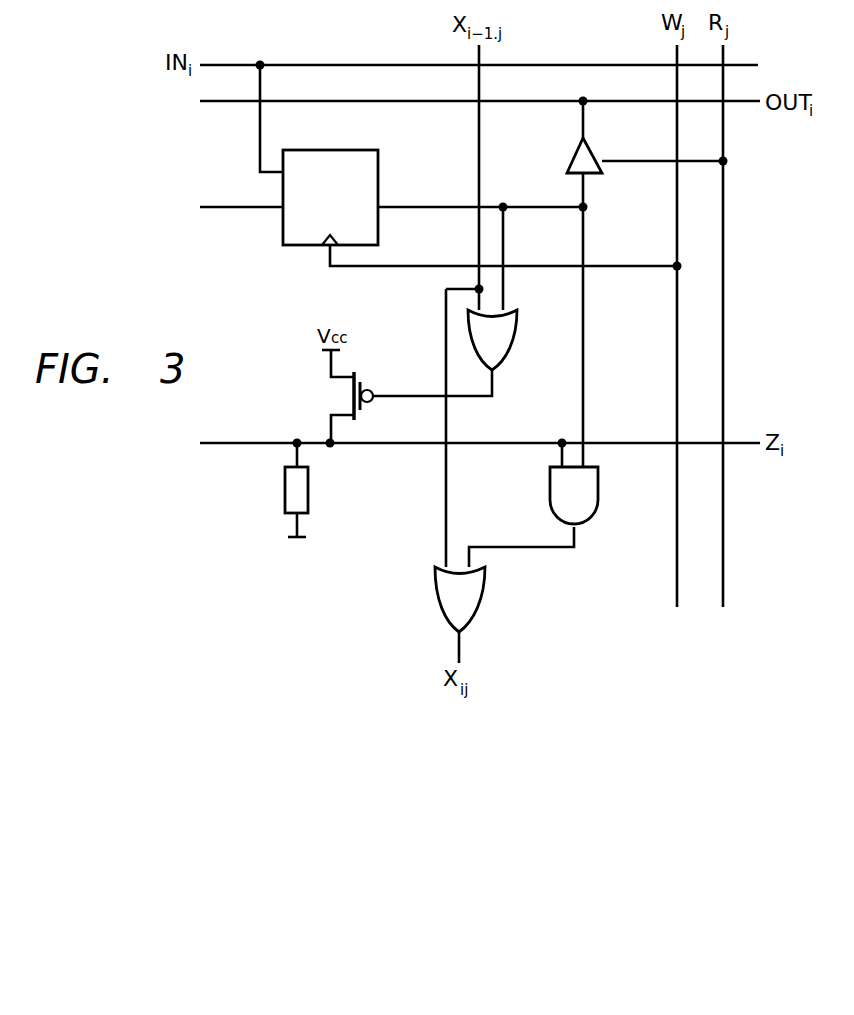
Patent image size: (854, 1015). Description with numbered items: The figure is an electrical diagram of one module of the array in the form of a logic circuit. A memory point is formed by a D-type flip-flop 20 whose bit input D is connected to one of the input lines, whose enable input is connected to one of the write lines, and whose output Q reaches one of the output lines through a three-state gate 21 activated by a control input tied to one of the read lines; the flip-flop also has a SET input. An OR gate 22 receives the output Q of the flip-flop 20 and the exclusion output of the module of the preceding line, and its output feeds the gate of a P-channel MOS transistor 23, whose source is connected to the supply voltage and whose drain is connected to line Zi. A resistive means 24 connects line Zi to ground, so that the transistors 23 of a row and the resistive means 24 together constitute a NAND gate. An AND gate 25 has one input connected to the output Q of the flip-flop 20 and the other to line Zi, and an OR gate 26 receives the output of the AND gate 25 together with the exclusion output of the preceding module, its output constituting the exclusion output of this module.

The D-type flip-flop 20 is at (378, 167).
The three-state gate 21 is at (600, 176).
The OR gate 22 is at (506, 357).
The P-channel MOS transistor 23 is at (342, 397).
The resistive means 24 is at (287, 492).
The AND gate 25 is at (550, 487).
The OR gate 26 is at (435, 586).